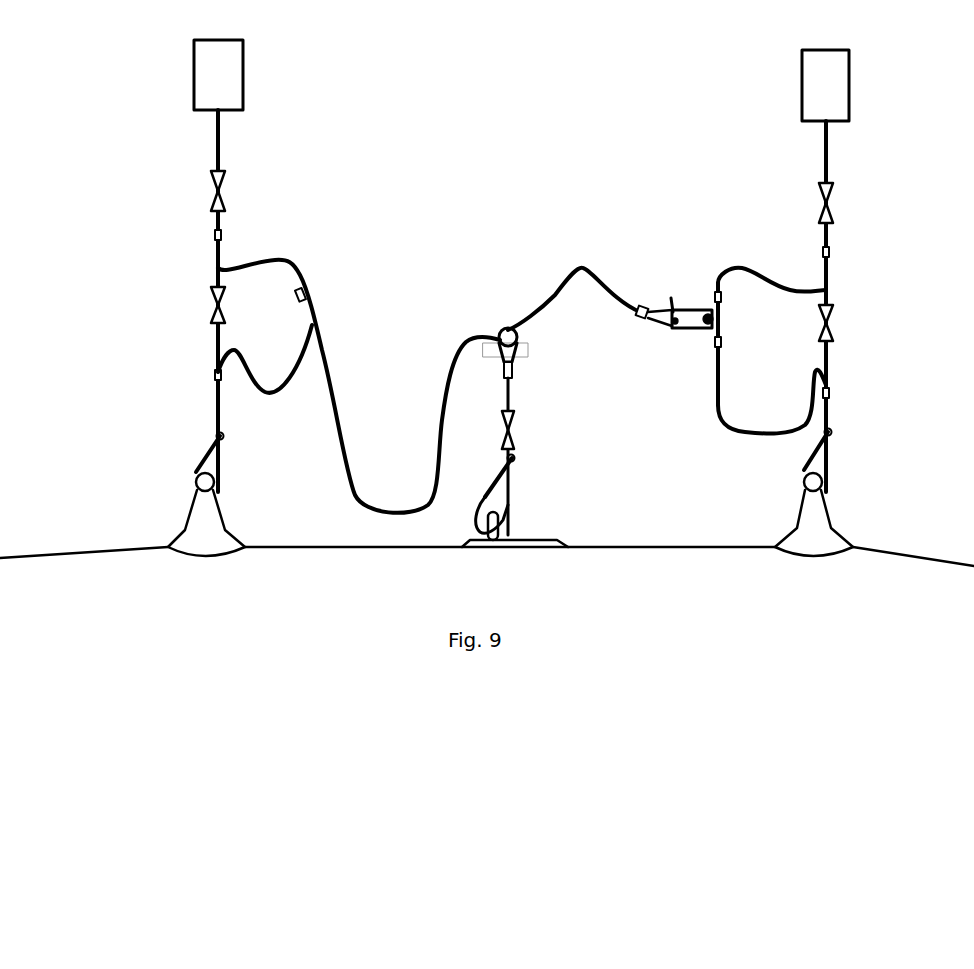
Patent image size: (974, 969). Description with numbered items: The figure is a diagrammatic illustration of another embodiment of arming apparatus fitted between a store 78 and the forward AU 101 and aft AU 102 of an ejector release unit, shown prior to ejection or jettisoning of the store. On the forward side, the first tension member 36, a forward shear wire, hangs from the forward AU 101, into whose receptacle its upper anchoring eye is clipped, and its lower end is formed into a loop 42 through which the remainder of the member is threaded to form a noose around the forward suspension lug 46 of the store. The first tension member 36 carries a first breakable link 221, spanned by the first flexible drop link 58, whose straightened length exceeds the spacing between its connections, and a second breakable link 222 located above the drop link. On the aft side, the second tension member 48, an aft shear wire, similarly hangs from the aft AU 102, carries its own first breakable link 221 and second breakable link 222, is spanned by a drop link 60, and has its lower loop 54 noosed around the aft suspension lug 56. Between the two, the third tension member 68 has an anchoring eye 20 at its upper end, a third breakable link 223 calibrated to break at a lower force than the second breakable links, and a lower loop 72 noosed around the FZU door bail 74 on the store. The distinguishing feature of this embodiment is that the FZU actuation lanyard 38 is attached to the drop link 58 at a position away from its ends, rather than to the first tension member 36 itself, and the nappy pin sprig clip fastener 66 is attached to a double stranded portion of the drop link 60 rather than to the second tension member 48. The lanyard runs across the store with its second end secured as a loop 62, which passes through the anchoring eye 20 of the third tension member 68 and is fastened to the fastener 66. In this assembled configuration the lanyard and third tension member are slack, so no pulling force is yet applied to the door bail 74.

The forward AU 101 is at (243, 46).
The aft AU 102 is at (849, 58).
The second breakable link 222 is at (222, 191).
The first breakable link 221 is at (215, 305).
The third breakable link 223 is at (512, 430).
The first flexible drop link 58 is at (300, 270).
The first tension member 36 is at (217, 395).
The second tension member 48 is at (830, 405).
The anchoring eye 20 is at (505, 327).
The third tension member 68 is at (510, 398).
The loop 72 is at (515, 462).
The FZU door bail 74 is at (500, 535).
The store 78 is at (670, 567).
The FZU actuation lanyard 38 is at (583, 272).
The loop 62 is at (655, 330).
The nappy pin sprig clip fastener 66 is at (680, 312).
The drop link 60 is at (720, 362).
The loop 42 is at (222, 437).
The loop 54 is at (812, 455).
The forward suspension lug 46 is at (198, 535).
The aft suspension lug 56 is at (832, 537).